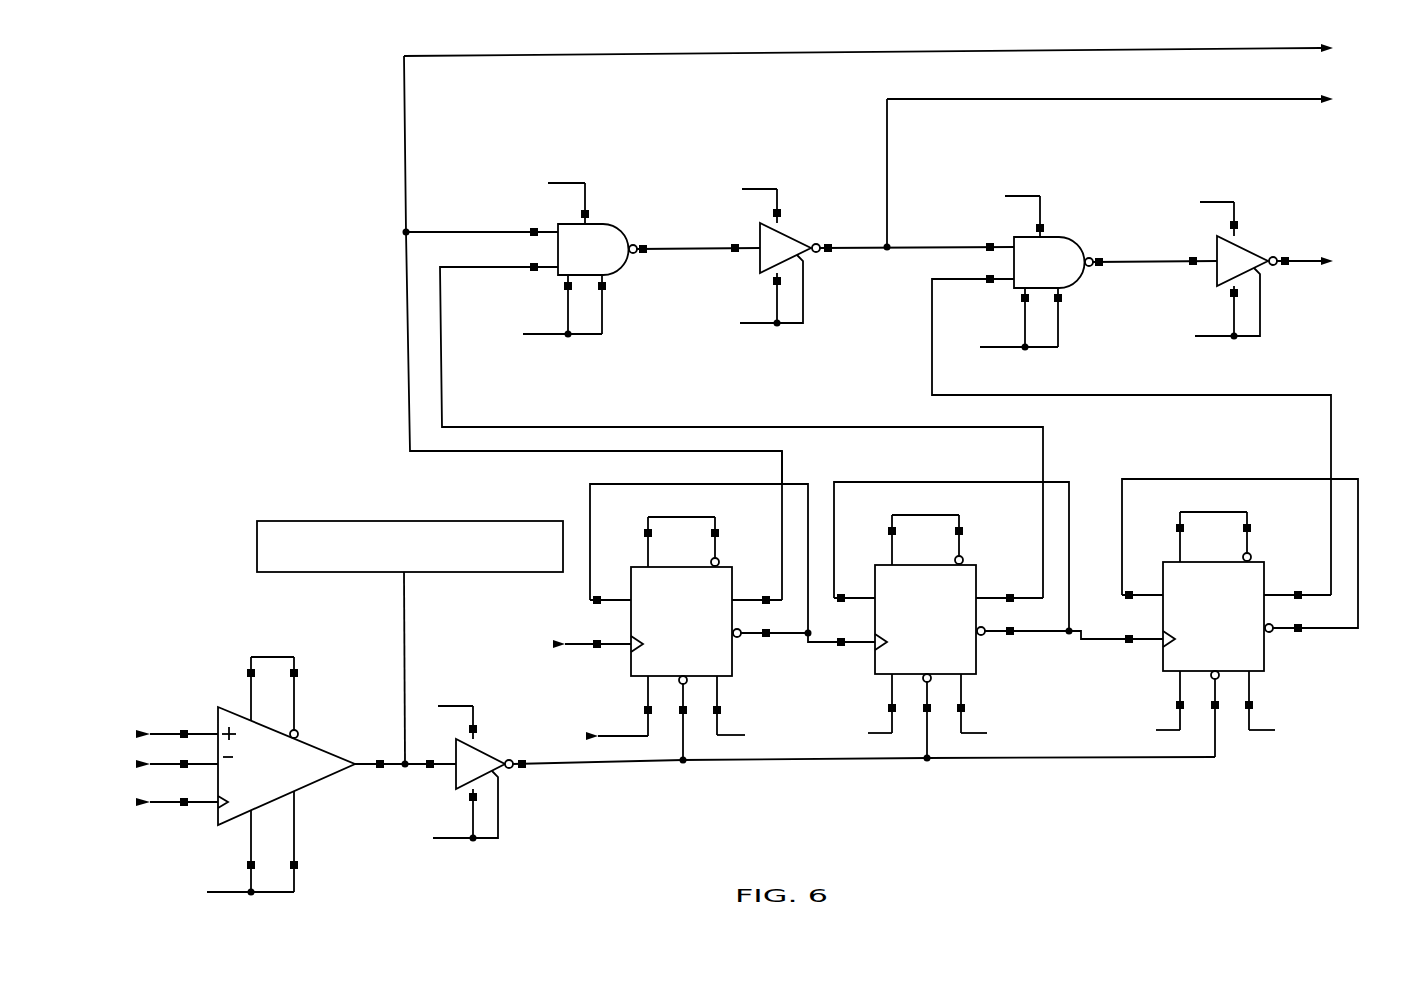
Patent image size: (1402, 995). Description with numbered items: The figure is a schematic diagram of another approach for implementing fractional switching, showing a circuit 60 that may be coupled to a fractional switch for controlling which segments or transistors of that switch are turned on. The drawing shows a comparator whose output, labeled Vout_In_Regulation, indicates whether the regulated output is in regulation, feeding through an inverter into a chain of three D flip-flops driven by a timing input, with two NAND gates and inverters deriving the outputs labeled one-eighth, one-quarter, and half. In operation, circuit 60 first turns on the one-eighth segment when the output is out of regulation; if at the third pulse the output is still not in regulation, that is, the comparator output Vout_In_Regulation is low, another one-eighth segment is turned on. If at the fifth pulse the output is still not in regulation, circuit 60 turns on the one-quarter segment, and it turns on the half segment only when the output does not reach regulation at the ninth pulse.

The circuit 60 is at (318, 345).